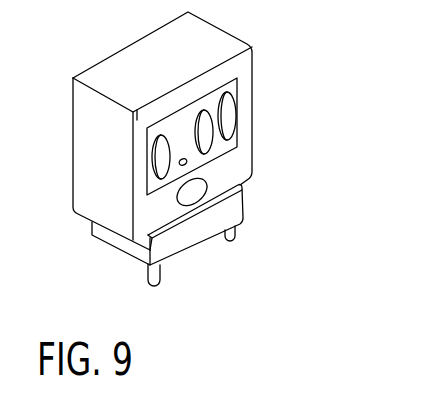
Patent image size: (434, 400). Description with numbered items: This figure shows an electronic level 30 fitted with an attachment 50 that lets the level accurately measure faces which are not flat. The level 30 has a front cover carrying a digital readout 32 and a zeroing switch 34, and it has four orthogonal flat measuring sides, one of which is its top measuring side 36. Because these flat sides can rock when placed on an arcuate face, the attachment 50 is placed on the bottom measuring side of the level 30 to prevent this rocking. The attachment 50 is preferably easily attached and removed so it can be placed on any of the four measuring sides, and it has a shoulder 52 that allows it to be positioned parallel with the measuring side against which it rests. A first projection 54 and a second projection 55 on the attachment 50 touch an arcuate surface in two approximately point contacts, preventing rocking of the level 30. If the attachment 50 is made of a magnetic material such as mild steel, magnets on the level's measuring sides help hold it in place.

The electronic level 30 is at (228, 43).
The digital readout 32 is at (230, 117).
The zeroing switch 34 is at (193, 190).
The top measuring side 36 is at (178, 71).
The attachment 50 is at (233, 207).
The shoulder 52 is at (152, 242).
The first projection 54 is at (240, 233).
The second projection 55 is at (163, 277).